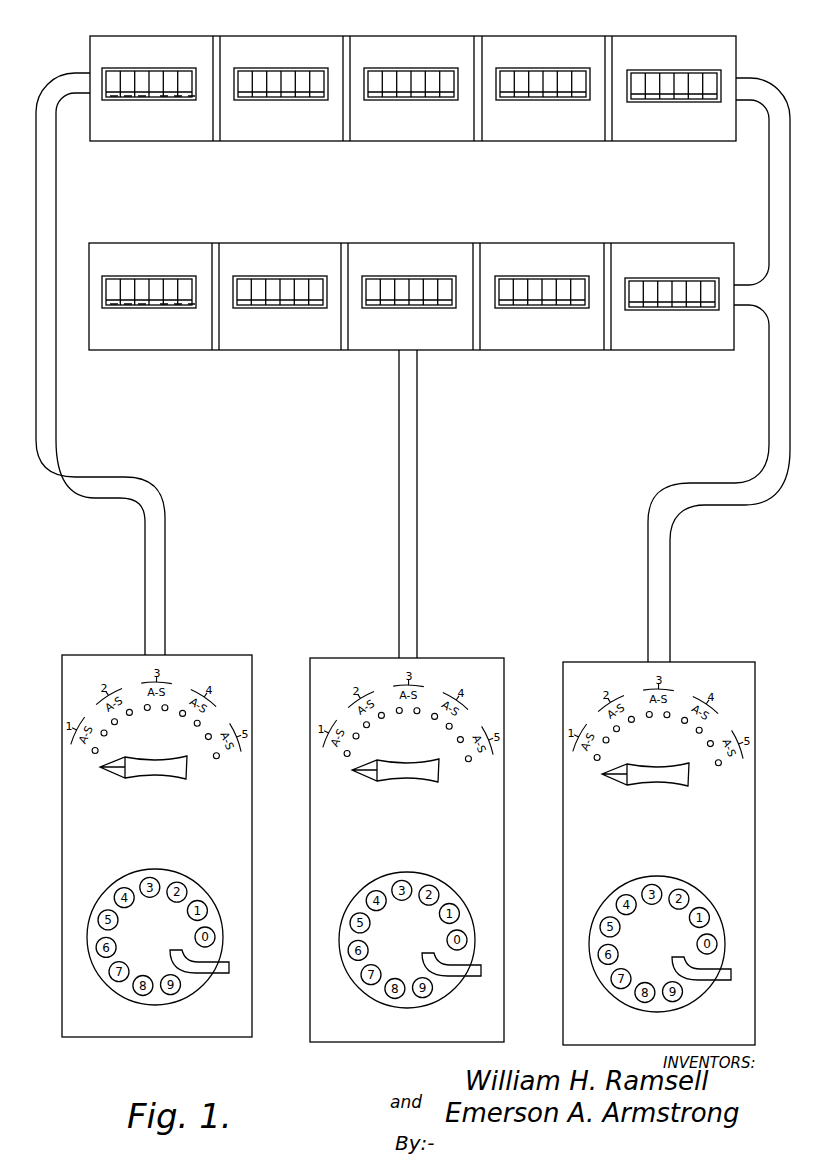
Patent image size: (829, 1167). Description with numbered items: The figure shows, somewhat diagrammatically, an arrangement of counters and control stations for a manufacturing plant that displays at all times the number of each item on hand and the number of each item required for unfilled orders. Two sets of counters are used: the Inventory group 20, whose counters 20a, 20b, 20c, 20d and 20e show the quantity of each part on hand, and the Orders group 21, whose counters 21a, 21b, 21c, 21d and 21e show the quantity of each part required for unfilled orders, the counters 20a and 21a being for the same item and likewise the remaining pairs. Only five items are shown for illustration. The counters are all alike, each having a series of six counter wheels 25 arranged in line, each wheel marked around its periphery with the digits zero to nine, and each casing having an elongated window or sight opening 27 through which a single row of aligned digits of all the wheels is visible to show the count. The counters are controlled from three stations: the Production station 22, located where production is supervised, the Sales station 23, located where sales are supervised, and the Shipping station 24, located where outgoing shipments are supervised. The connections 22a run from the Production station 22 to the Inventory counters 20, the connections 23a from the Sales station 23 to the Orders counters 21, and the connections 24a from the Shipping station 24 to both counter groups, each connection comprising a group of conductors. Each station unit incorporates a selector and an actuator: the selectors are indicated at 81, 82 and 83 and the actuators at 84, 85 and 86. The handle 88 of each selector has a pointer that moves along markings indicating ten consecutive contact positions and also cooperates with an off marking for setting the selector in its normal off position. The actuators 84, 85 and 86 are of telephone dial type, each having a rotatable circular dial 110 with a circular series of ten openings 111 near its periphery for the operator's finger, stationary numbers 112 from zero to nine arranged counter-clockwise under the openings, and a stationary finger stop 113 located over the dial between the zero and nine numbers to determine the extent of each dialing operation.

The Inventory counter group 20 is at (437, 153).
The Inventory counter 20a is at (177, 39).
The Inventory counter 20b is at (309, 38).
The Inventory counter 20c is at (439, 38).
The Inventory counter 20d is at (571, 38).
The Inventory counter 20e is at (703, 38).
The Orders counter group 21 is at (382, 365).
The Orders counter 21a is at (194, 235).
The Orders counter 21b is at (322, 234).
The Orders counter 21c is at (448, 235).
The Orders counter 21d is at (576, 235).
The Orders counter 21e is at (698, 237).
The counter wheels 25 is at (166, 358).
The window 27 is at (102, 73).
The Production station 22 is at (147, 1048).
The Sales station 23 is at (398, 1051).
The Shipping station 24 is at (559, 1029).
The connections 22a is at (113, 492).
The connections 23a is at (399, 486).
The connections 24a is at (648, 532).
The selector 81 is at (93, 779).
The selector 82 is at (343, 781).
The selector 83 is at (593, 789).
The counter actuator 84 is at (88, 973).
The counter actuator 85 is at (333, 959).
The counter actuator 86 is at (585, 950).
The handle 88 is at (648, 781).
The dial 110 is at (613, 891).
The openings 111 is at (652, 884).
The stationary numbers 112 is at (699, 907).
The finger stop 113 is at (702, 983).